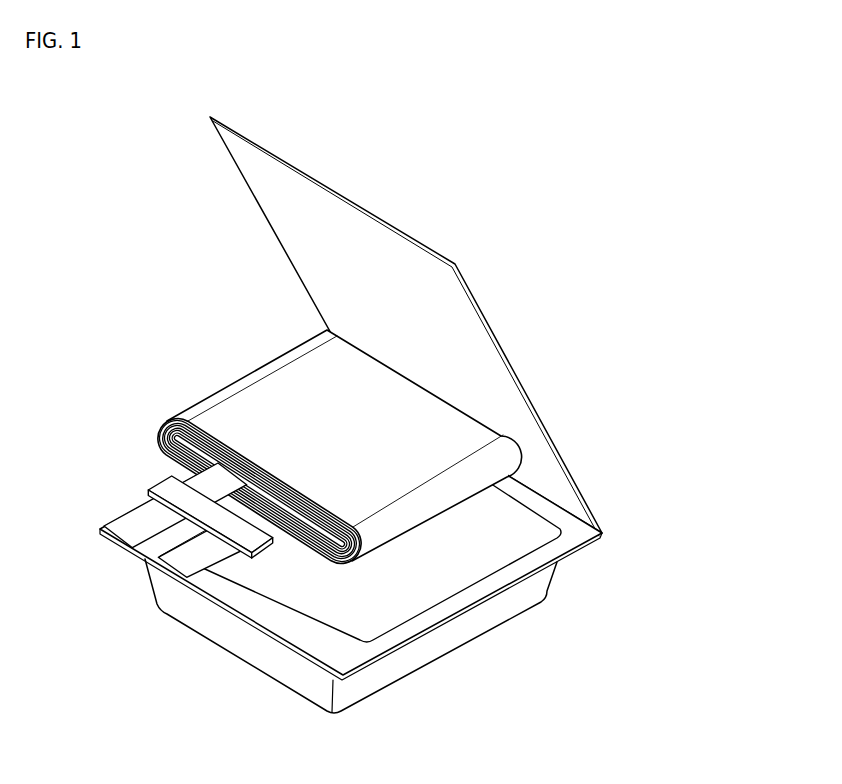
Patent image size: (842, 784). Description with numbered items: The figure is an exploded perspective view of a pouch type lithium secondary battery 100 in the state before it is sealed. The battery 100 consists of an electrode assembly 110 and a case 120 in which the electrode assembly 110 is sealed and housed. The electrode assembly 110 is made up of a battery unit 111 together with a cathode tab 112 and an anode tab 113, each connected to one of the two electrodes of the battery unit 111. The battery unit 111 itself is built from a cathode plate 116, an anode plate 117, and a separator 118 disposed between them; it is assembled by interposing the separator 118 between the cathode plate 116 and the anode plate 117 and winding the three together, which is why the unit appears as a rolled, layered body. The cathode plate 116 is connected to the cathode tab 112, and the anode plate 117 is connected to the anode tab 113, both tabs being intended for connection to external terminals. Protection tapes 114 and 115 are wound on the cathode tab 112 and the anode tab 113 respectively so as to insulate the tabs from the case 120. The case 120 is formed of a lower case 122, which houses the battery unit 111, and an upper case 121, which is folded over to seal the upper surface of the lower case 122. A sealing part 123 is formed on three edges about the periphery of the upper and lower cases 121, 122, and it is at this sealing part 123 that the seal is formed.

The pouch type lithium secondary battery 100 is at (95, 155).
The electrode assembly 110 is at (210, 357).
The battery unit 111 is at (135, 347).
The cathode tab 112 is at (178, 565).
The anode tab 113 is at (140, 515).
The protection tape 114 is at (175, 547).
The protection tape 115 is at (165, 485).
The cathode plate 116 is at (164, 418).
The anode plate 117 is at (158, 440).
The separator 118 is at (158, 430).
The case 120 is at (661, 486).
The upper case 121 is at (583, 492).
The lower case 122 is at (575, 556).
The sealing part 123 is at (308, 638).